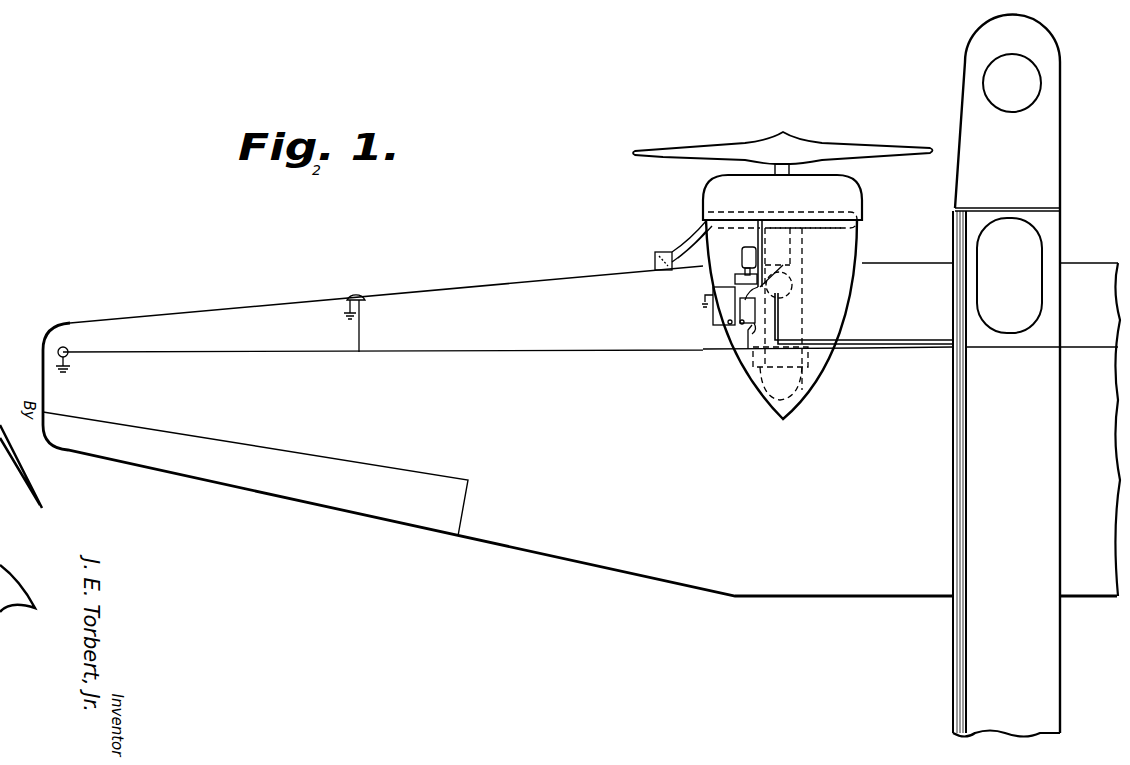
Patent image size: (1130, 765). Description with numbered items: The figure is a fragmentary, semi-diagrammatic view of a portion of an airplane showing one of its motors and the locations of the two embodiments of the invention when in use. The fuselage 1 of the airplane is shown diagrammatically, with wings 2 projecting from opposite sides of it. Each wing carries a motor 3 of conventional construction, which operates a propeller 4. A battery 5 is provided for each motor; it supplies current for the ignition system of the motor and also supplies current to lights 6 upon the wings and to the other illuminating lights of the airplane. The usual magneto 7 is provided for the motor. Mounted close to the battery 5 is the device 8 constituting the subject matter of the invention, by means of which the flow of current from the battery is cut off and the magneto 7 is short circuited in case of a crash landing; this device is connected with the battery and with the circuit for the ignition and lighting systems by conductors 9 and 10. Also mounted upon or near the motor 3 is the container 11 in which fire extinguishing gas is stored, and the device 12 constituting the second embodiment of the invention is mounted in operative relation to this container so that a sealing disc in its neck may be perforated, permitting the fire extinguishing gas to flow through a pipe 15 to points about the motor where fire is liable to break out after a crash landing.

The fuselage 1 is at (983, 621).
The wings 2 is at (788, 568).
The motor 3 is at (838, 303).
The propeller 4 is at (705, 155).
The battery 5 is at (718, 304).
The lights 6 is at (65, 350).
The magneto 7 is at (783, 247).
The device 8 is at (747, 318).
The conductor 9 is at (733, 323).
The conductor 10 is at (753, 335).
The container 11 is at (742, 257).
The device 12 is at (735, 279).
The pipe 15 is at (762, 224).